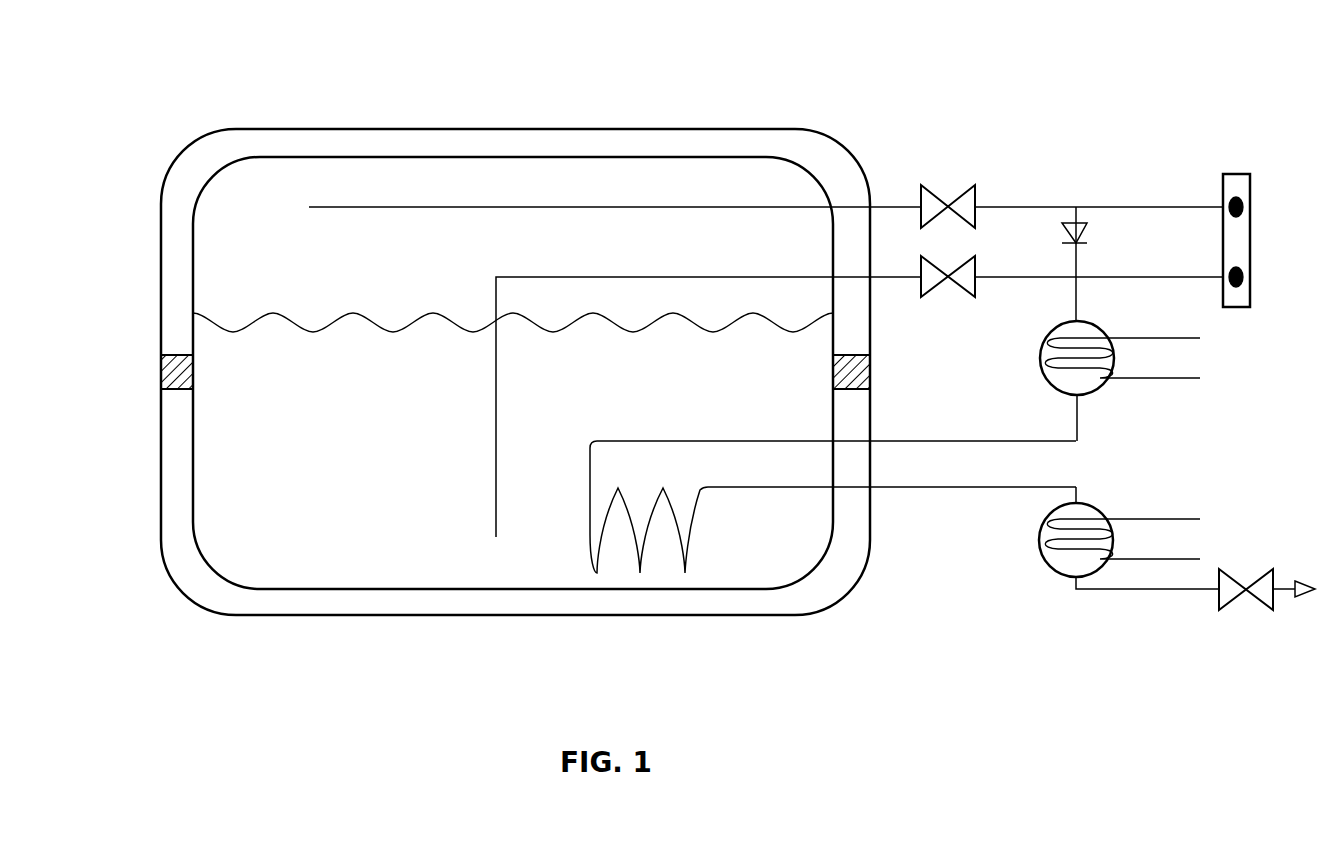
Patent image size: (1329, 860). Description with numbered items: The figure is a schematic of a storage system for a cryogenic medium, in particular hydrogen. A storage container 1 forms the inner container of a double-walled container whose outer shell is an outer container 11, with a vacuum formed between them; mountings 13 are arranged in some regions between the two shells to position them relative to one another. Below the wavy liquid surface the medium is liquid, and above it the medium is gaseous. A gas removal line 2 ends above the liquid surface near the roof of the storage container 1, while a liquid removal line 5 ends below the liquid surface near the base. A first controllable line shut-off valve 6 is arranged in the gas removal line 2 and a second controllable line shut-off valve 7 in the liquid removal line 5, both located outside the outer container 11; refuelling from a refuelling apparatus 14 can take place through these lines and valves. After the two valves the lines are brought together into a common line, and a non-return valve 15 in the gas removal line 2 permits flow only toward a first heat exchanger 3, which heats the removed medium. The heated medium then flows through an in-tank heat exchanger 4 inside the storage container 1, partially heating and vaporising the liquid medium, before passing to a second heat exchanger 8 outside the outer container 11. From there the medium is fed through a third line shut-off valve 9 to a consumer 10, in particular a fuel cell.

The storage container 1 is at (412, 157).
The gas removal line 2 is at (622, 207).
The first heat exchanger 3 is at (1121, 385).
The in-tank heat exchanger 4 is at (708, 535).
The liquid removal line 5 is at (686, 277).
The first controllable line shut-off valve 6 is at (950, 185).
The second controllable line shut-off valve 7 is at (950, 300).
The second heat exchanger 8 is at (1053, 580).
The third line shut-off valve 9 is at (1240, 615).
The consumer 10 is at (1310, 605).
The outer container 11 is at (373, 128).
The mountings 13 is at (175, 355).
The refuelling apparatus 14 is at (1240, 175).
The non-return valve 15 is at (1093, 225).